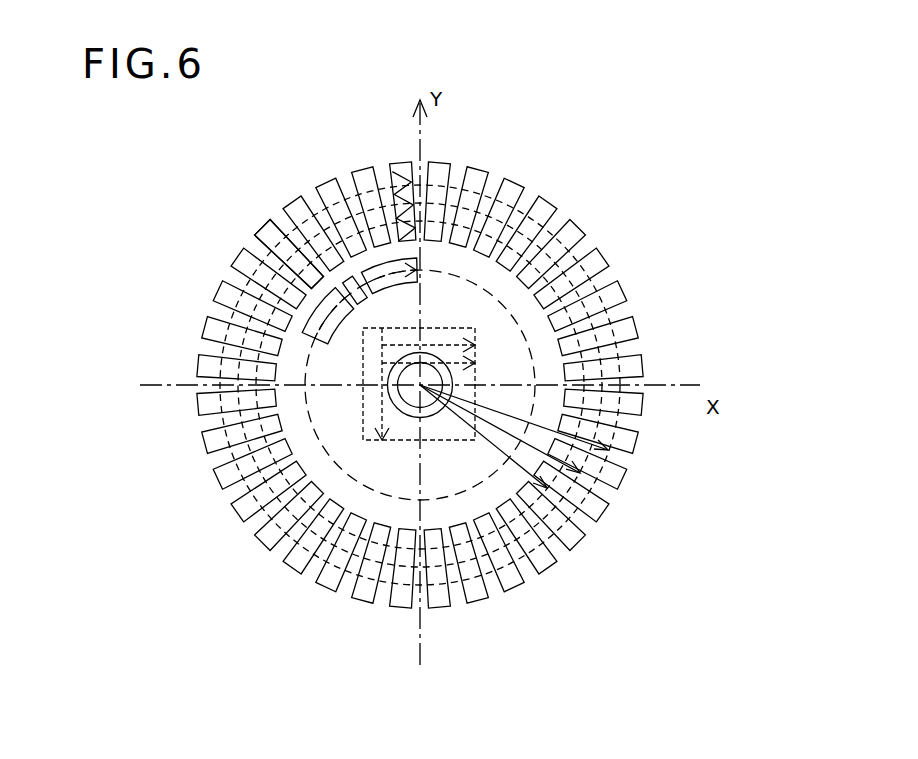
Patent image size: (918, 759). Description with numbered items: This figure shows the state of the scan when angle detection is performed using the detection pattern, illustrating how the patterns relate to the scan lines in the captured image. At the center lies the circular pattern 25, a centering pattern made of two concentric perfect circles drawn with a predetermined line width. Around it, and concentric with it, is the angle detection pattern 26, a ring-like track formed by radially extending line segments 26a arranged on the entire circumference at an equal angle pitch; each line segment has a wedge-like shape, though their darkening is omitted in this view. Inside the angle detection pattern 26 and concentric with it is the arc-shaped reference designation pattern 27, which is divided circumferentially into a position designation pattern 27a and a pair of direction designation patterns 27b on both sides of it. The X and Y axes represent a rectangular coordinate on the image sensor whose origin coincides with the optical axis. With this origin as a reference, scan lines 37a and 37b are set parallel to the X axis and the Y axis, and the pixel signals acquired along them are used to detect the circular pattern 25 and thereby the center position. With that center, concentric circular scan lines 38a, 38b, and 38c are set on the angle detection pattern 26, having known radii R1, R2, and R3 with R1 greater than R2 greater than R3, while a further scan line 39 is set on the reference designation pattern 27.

The circular pattern 25 is at (453, 390).
The angle detection pattern 26 is at (512, 175).
The line segments 26a is at (578, 225).
The reference designation pattern 27 is at (305, 334).
The position designation pattern 27a is at (300, 215).
The direction designation patterns 27b is at (405, 258).
The scan lines 37a is at (390, 343).
The scan lines 37b is at (373, 410).
The circular scan line 38a is at (600, 297).
The circular scan line 38b is at (604, 367).
The circular scan line 38c is at (598, 414).
The scan line 39 is at (488, 453).
The radius R1 is at (514, 417).
The radius R2 is at (500, 429).
The radius R3 is at (483, 441).